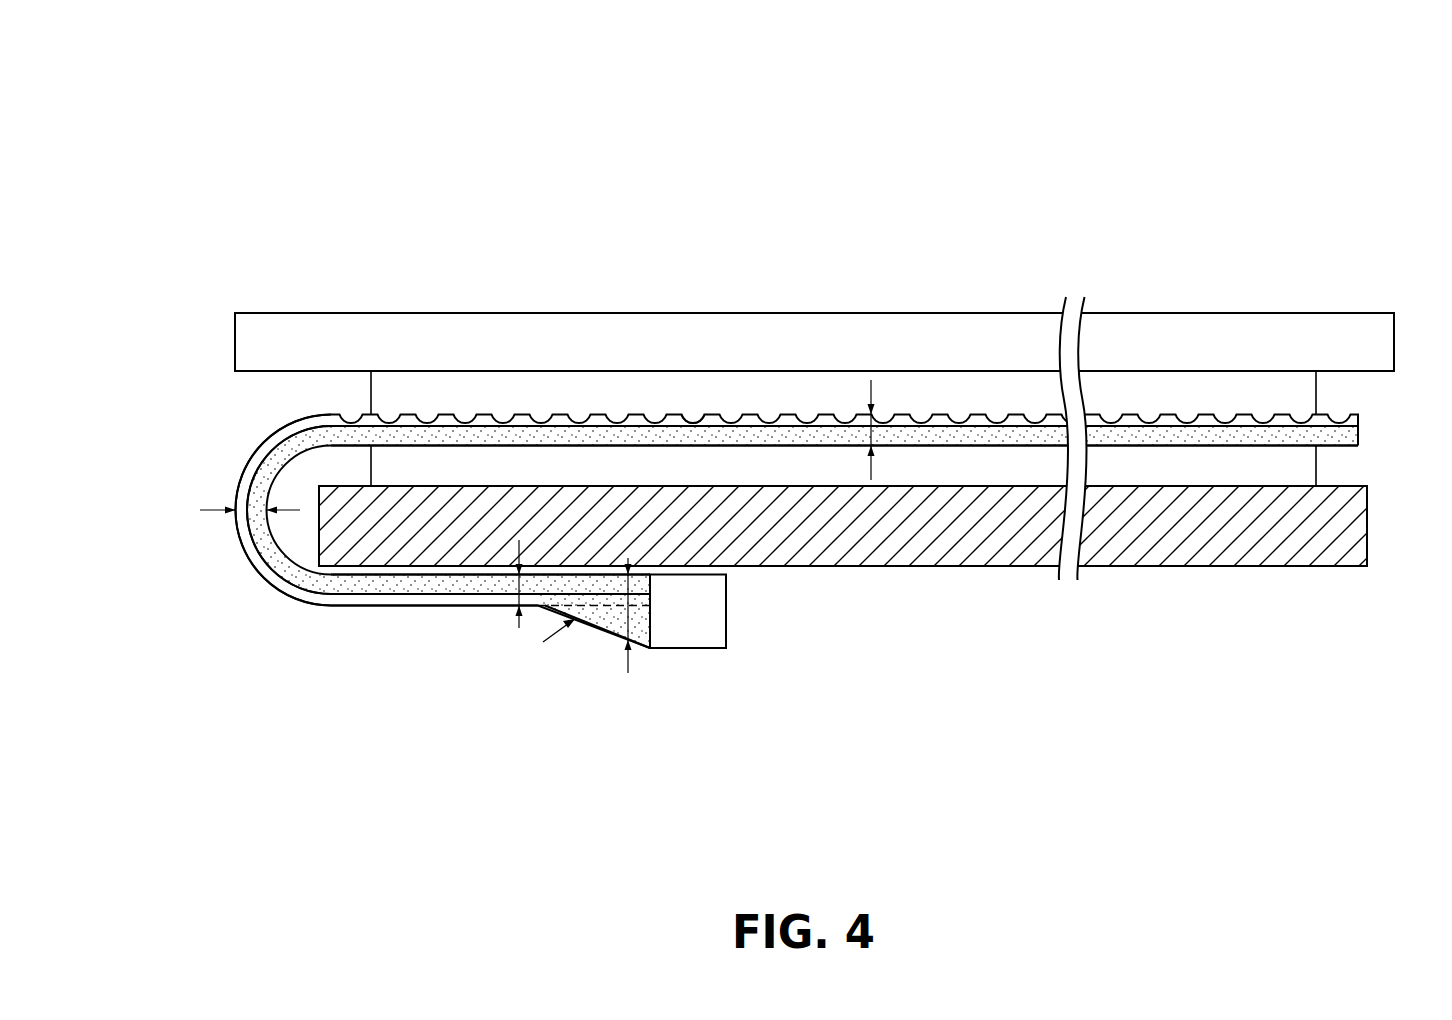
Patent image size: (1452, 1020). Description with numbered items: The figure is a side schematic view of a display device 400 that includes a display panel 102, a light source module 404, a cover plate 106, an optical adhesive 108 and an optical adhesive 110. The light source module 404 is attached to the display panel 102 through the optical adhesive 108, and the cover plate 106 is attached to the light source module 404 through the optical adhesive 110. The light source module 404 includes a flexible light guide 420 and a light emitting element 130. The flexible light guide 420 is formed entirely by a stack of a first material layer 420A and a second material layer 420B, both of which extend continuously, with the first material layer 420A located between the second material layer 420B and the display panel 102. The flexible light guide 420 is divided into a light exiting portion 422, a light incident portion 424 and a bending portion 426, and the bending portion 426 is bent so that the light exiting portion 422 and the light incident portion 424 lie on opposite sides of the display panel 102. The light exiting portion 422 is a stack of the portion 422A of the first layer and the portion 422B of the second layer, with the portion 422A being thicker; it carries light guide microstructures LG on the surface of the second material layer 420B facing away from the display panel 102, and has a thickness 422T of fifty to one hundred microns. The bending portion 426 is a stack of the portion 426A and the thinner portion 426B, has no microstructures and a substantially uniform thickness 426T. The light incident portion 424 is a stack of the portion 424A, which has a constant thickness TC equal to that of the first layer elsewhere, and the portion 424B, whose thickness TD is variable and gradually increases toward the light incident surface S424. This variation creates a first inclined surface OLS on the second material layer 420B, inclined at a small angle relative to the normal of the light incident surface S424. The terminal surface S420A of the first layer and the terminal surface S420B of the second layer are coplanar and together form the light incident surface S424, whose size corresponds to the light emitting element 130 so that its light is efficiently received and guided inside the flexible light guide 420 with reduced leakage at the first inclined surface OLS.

The light source module 404 is at (225, 98).
The flexible light guide 420 is at (293, 68).
The first material layer 420A is at (802, 349).
The second material layer 420B is at (387, 355).
The light emitting element 130 is at (755, 637).
The light exiting portion 422 is at (610, 165).
The portion of the first material layer (at light exiting portion) 422A is at (592, 442).
The portion of the second material layer (at light exiting portion) 422B is at (488, 422).
The light guide microstructures LG is at (701, 421).
The thickness of the light exiting portion 422T is at (871, 430).
The cover plate 106 is at (1385, 343).
The optical adhesive 110 is at (1297, 397).
The optical adhesive 108 is at (1298, 465).
The display panel 102 is at (1350, 530).
The bending portion 426 is at (137, 325).
The portion of the first material layer (at bending portion) 426A is at (273, 465).
The portion of the second material layer (at bending portion) 426B is at (250, 473).
The thickness of the bending portion 426T is at (242, 540).
The constant thickness TC is at (491, 603).
The thickness of the second material layer portion at the light incident portion TD is at (640, 613).
The first inclined surface OLS is at (567, 612).
The light incident portion 424 is at (667, 797).
The portion of the first material layer (at light incident portion) 424A is at (600, 583).
The portion of the second material layer (at light incident portion) 424B is at (612, 635).
The light incident surface S424 is at (842, 713).
The terminal surface of the first material layer S420A is at (653, 586).
The terminal surface of the second material layer S420B is at (653, 629).
The display device 400 is at (1414, 820).